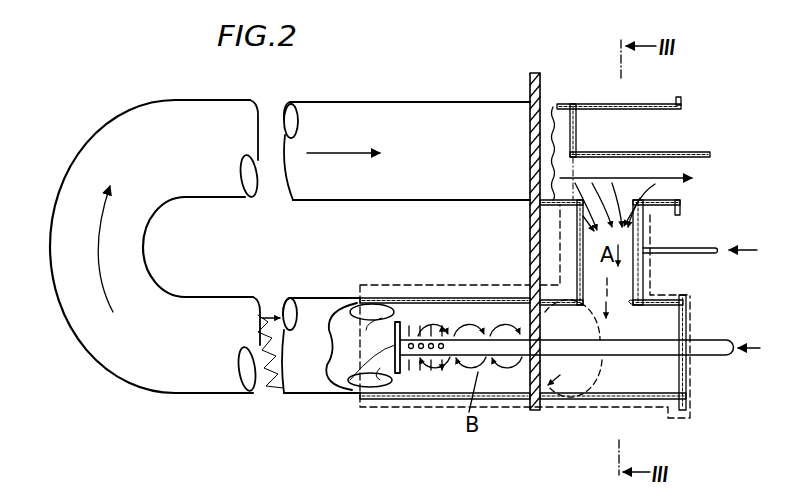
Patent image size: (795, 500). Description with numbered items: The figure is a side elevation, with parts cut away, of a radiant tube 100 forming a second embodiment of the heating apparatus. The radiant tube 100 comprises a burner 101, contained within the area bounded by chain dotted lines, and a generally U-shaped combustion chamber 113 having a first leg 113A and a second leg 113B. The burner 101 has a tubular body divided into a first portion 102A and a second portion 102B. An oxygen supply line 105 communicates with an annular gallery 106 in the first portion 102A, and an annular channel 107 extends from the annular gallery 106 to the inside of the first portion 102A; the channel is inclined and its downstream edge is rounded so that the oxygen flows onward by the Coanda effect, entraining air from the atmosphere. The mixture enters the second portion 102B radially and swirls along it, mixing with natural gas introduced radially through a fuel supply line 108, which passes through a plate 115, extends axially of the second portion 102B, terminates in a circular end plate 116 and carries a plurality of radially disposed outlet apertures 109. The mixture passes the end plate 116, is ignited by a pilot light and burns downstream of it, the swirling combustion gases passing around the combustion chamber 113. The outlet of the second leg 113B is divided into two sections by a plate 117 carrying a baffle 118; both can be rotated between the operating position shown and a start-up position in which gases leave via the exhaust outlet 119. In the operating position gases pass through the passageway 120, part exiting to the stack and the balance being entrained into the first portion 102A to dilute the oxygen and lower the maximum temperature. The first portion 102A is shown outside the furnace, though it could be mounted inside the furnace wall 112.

The radiant tube 100 is at (172, 97).
The combustion chamber 113 is at (100, 158).
The first leg 113A is at (310, 386).
The second leg 113B is at (485, 165).
The furnace wall 112 is at (541, 80).
The baffle 118 is at (575, 124).
The exhaust outlet 119 is at (680, 120).
The plate 117 is at (709, 150).
The passageway 120 is at (690, 168).
The annular channel 107 is at (666, 194).
The first portion of tubular body 102A is at (648, 228).
The oxygen supply line 105 is at (693, 256).
The annular gallery 106 is at (633, 301).
The plate 115 is at (688, 316).
The burner 101 is at (387, 282).
The second portion of tubular body 102B is at (486, 297).
The circular end plate 116 is at (352, 376).
The outlet apertures 109 is at (417, 355).
The fuel supply line 108 is at (626, 356).